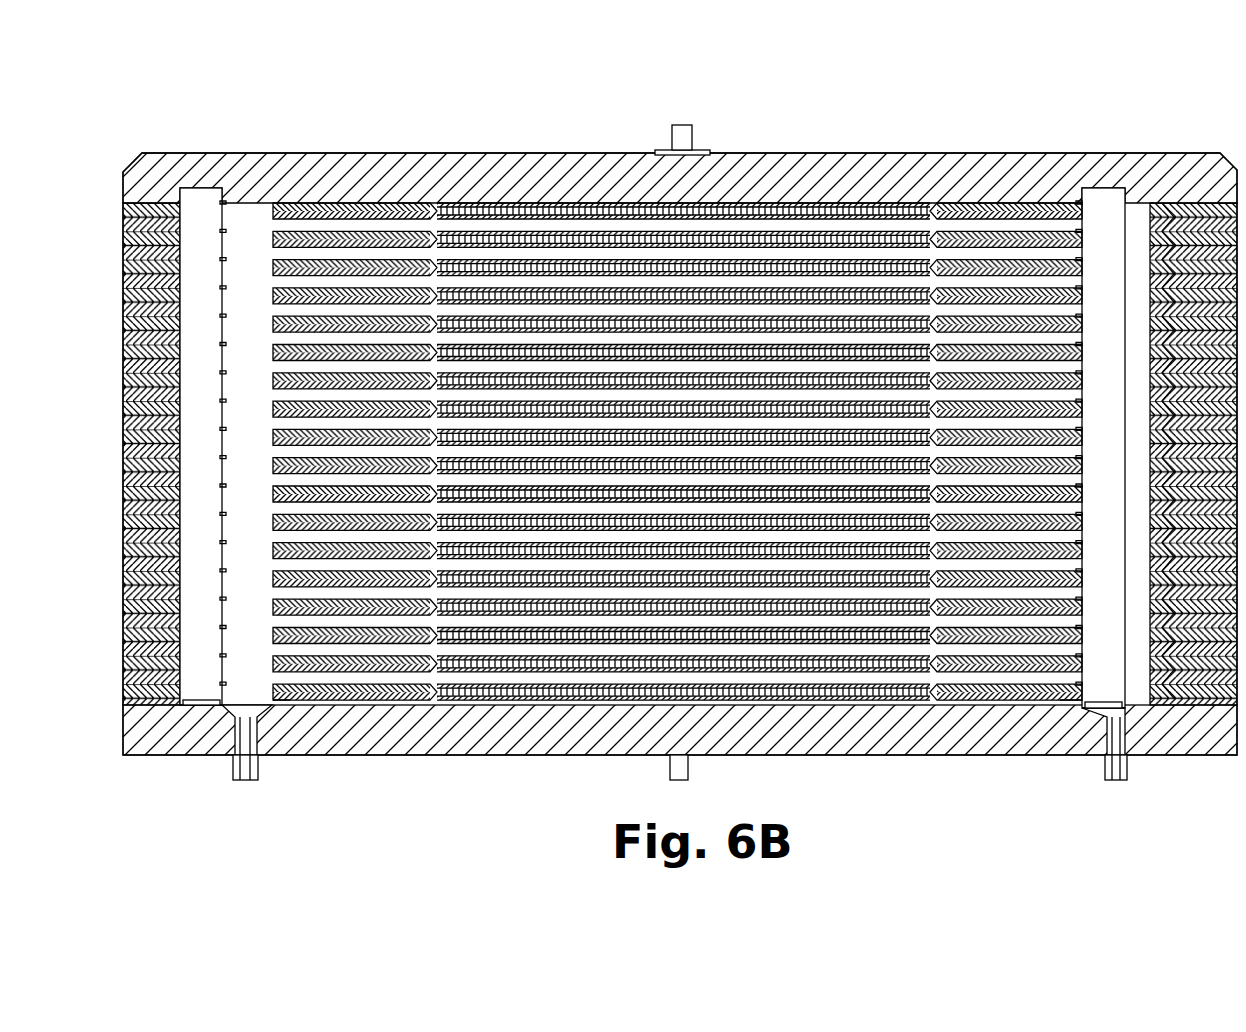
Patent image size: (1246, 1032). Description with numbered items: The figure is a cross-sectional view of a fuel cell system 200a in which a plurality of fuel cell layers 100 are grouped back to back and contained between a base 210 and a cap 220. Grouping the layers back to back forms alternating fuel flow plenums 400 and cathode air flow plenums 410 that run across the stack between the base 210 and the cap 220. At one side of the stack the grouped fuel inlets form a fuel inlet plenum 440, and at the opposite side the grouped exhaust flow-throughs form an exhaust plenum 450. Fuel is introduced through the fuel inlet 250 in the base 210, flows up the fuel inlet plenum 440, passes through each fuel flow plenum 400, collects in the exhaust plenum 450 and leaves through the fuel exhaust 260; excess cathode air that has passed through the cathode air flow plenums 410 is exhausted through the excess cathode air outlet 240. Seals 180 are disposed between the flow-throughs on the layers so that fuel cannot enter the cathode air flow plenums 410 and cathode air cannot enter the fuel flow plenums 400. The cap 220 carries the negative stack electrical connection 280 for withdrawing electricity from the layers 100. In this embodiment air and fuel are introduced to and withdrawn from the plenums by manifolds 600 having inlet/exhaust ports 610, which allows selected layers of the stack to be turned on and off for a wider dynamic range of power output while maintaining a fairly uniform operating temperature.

The fuel cell system 200a is at (238, 86).
The fuel cell layer 100 is at (762, 225).
The seal 180 is at (1158, 212).
The base 210 is at (817, 755).
The cap 220 is at (897, 153).
The excess cathode air outlet 240 is at (668, 771).
The fuel inlet 250 is at (241, 798).
The fuel exhaust 260 is at (1117, 800).
The negative stack electrical connection 280 is at (682, 125).
The fuel flow plenum 400 is at (677, 382).
The cathode air flow plenum 410 is at (609, 212).
The fuel inlet plenum 440 is at (240, 232).
The exhaust plenum 450 is at (1125, 230).
The manifold 600 is at (198, 707).
The inlet/exhaust port 610 is at (283, 697).